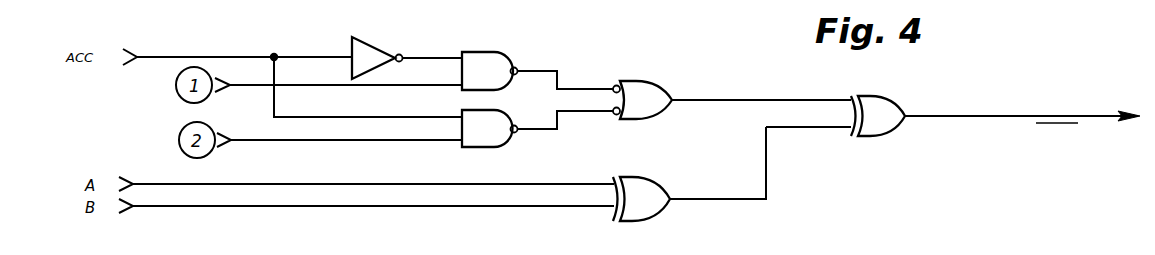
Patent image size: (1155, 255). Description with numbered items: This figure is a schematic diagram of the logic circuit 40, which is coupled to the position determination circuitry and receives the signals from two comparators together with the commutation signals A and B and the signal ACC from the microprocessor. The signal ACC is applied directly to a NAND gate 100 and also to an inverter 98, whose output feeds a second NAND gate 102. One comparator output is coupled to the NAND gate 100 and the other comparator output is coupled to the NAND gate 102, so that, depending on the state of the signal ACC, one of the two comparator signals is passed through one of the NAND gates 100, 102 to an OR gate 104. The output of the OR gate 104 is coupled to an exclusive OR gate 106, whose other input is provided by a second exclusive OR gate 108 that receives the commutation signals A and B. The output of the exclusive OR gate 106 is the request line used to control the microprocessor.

The logic circuit 40 is at (640, 54).
The inverter 98 is at (372, 44).
The NAND gate 100 is at (498, 146).
The second NAND gate 102 is at (500, 50).
The OR gate 104 is at (664, 82).
The exclusive OR gate 106 is at (896, 100).
The second exclusive OR gate 108 is at (660, 180).